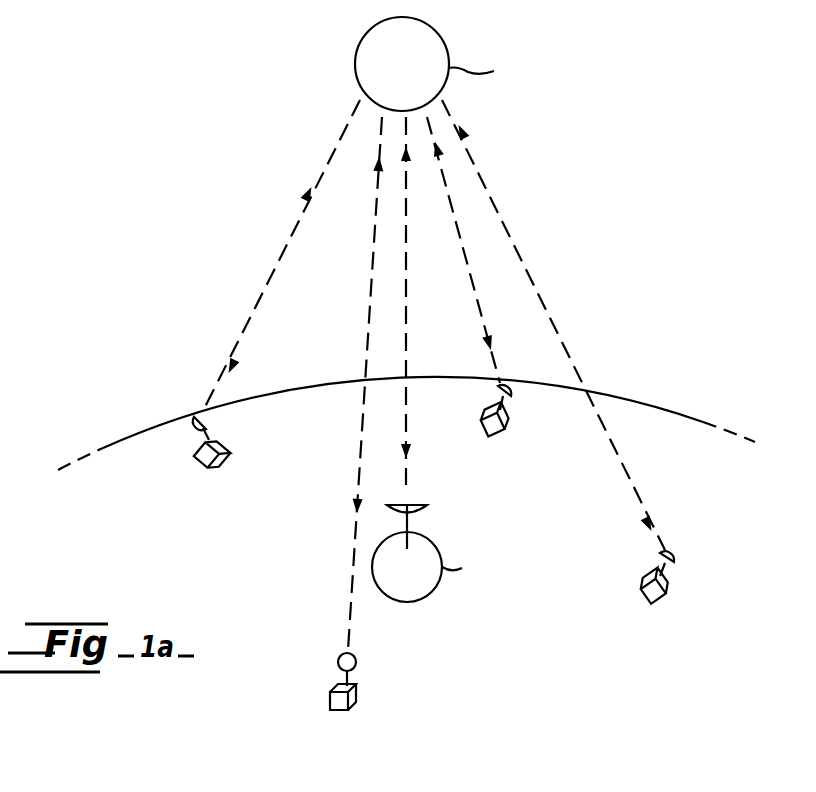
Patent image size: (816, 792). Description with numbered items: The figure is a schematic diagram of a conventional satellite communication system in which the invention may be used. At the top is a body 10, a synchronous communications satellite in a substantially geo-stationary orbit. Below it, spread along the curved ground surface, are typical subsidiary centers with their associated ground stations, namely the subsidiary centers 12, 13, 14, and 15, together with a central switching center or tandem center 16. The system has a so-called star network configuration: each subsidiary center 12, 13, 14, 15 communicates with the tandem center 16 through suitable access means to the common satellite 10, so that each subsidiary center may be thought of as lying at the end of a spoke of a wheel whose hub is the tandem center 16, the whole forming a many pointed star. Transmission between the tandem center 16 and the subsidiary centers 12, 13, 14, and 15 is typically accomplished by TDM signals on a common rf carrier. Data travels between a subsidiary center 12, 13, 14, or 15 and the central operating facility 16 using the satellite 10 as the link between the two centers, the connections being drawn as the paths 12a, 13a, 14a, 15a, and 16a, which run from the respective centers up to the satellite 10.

The satellite 10 is at (443, 40).
The subsidiary center 12 is at (228, 448).
The subsidiary center 13 is at (512, 420).
The subsidiary center 14 is at (674, 582).
The subsidiary center 15 is at (352, 698).
The tandem center 16 is at (408, 602).
The path 12a is at (246, 330).
The path 13a is at (484, 310).
The path 14a is at (572, 356).
The path 15a is at (371, 292).
The path 16a is at (407, 342).